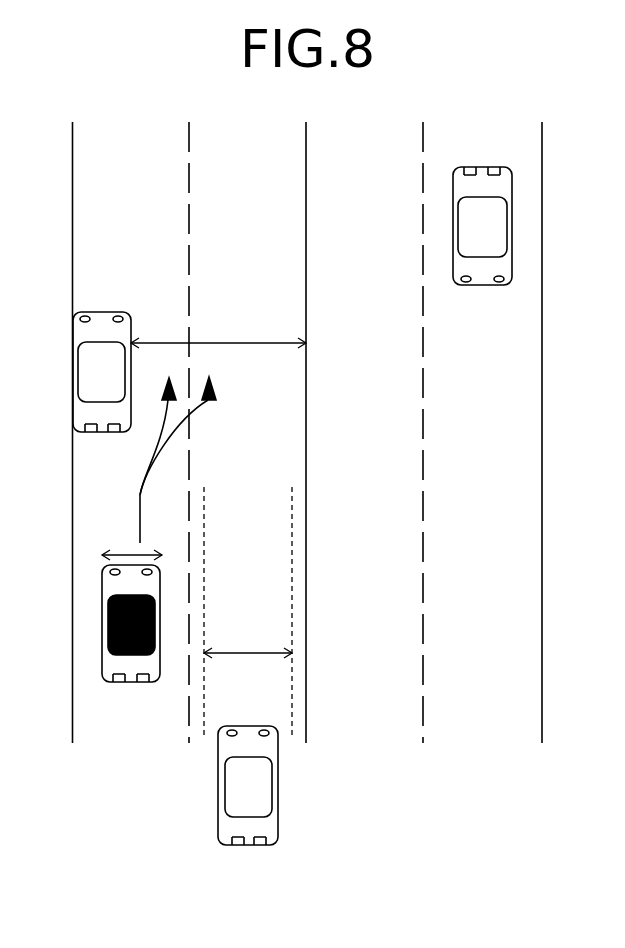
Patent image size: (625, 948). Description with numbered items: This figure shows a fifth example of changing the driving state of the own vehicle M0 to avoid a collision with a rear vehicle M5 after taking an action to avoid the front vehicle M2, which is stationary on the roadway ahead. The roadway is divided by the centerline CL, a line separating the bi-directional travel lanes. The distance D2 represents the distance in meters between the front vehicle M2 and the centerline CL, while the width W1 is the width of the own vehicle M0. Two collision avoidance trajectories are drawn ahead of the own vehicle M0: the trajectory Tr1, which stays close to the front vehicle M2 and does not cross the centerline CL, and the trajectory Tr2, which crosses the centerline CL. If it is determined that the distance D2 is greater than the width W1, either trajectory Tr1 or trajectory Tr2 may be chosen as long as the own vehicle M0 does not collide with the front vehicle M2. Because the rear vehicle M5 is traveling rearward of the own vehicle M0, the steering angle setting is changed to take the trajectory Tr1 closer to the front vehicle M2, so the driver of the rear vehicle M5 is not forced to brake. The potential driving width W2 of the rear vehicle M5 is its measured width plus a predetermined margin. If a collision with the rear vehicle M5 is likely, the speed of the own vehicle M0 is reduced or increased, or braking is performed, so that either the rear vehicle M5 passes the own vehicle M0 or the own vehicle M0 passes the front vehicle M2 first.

The centerline CL is at (306, 252).
The front vehicle M2 is at (80, 415).
The own vehicle M0 is at (122, 683).
The rear vehicle M5 is at (278, 818).
The distance D2 is at (268, 345).
The width W1 is at (112, 548).
The potential driving width W2 is at (218, 650).
The collision avoidance trajectory Tr1 is at (146, 458).
The collision avoidance trajectory Tr2 is at (198, 423).